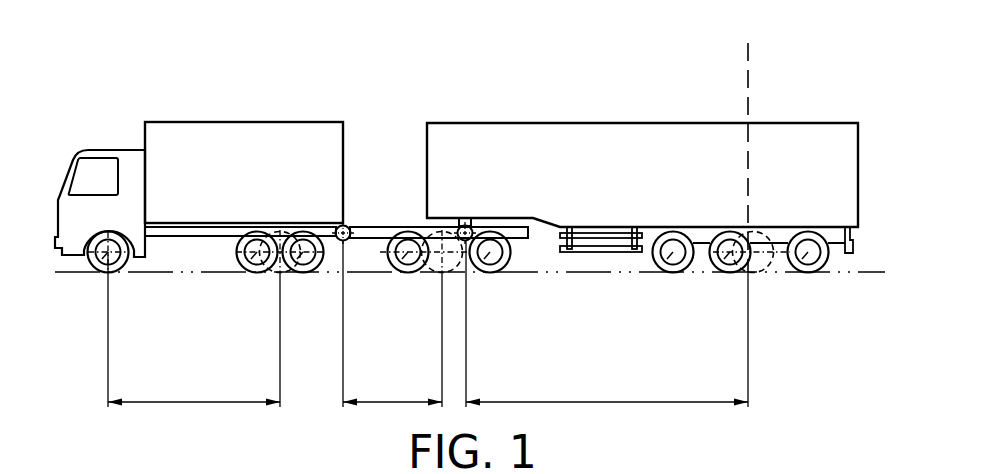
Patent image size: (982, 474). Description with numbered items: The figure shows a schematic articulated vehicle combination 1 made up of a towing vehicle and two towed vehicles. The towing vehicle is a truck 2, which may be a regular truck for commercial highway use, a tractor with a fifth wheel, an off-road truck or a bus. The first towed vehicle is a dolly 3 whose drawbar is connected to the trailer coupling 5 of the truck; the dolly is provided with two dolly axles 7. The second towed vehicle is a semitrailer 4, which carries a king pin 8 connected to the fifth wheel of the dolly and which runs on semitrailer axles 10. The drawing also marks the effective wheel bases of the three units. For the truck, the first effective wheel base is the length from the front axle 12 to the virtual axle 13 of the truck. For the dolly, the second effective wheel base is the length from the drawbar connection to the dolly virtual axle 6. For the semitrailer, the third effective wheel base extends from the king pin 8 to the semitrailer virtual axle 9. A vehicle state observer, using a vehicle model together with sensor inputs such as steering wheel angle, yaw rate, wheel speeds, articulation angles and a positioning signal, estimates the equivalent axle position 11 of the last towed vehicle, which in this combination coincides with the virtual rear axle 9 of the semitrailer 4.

The vehicle combination 1 is at (203, 46).
The truck 2 is at (258, 122).
The dolly 3 is at (413, 227).
The semitrailer 4 is at (648, 162).
The trailer coupling 5 is at (346, 226).
The dolly virtual axle 6 is at (430, 268).
The dolly axles 7 is at (401, 268).
The king pin 8 is at (473, 228).
The semitrailer virtual axle 9 is at (768, 262).
The semitrailer axles 10 is at (842, 343).
The equivalent axle position 11 is at (750, 80).
The front axle 12 is at (96, 272).
The virtual axle 13 is at (266, 272).